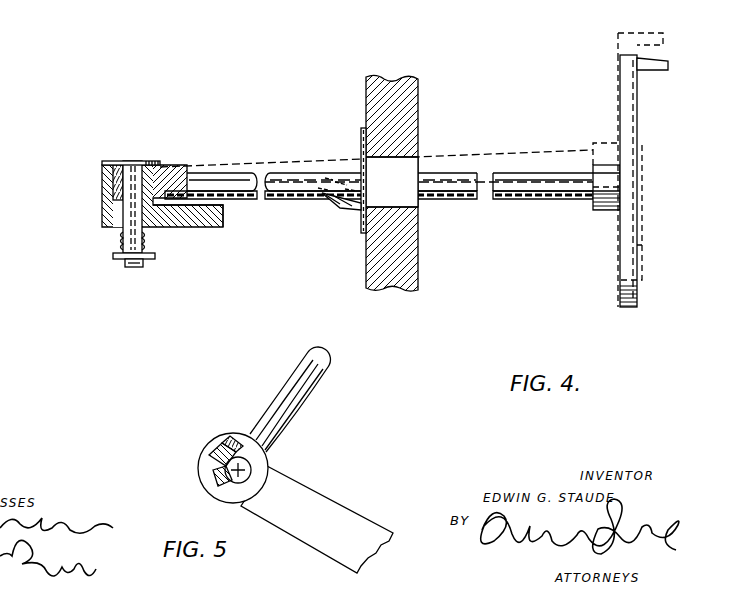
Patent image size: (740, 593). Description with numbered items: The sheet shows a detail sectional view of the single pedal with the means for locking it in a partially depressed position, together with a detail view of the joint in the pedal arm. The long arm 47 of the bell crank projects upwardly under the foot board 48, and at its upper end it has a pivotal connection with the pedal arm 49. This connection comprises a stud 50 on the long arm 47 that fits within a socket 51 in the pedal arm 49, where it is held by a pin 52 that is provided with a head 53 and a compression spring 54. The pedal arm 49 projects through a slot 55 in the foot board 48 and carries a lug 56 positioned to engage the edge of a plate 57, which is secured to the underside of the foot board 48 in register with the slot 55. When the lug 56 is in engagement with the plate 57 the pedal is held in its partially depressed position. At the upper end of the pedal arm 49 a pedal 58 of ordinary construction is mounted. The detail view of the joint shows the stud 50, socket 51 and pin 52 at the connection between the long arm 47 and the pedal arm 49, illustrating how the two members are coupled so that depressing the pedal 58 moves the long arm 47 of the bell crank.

In FIG. 4, the long arm 47 is at (224, 228).
In FIG. 5, the long arm 47 is at (300, 493).
In FIG. 4, the foot board 48 is at (418, 137).
In FIG. 4, the pedal arm 49 is at (224, 201).
In FIG. 5, the pedal arm 49 is at (255, 428).
In FIG. 4, the stud 50 is at (120, 192).
In FIG. 5, the stud 50 is at (226, 458).
In FIG. 4, the socket 51 is at (112, 178).
In FIG. 5, the socket 51 is at (238, 452).
In FIG. 4, the pin 52 is at (132, 208).
In FIG. 5, the pin 52 is at (221, 470).
In FIG. 4, the head 53 is at (102, 162).
In FIG. 4, the compression spring 54 is at (120, 236).
In FIG. 4, the slot 55 is at (410, 167).
In FIG. 4, the lug 56 is at (349, 210).
In FIG. 4, the plate 57 is at (361, 215).
In FIG. 4, the pedal 58 is at (632, 220).